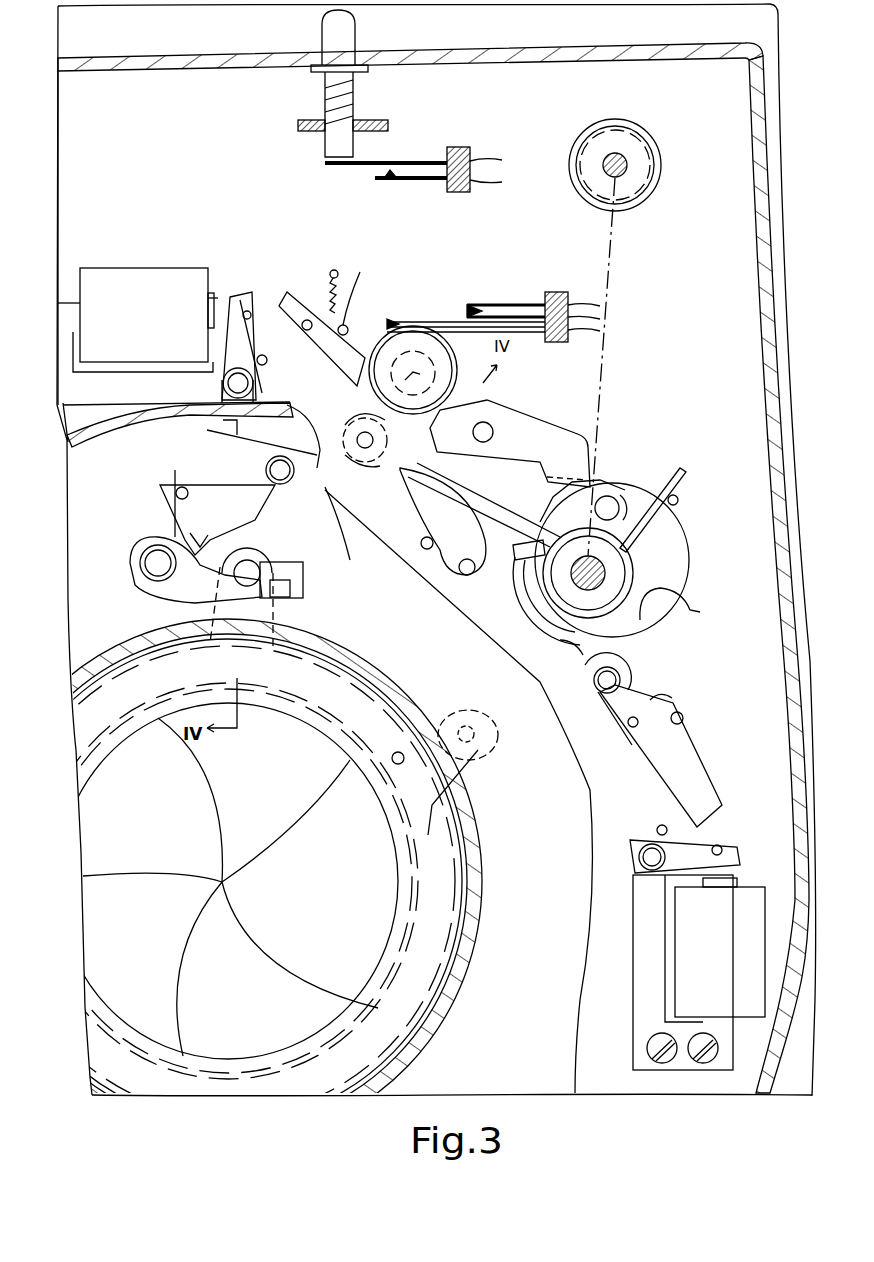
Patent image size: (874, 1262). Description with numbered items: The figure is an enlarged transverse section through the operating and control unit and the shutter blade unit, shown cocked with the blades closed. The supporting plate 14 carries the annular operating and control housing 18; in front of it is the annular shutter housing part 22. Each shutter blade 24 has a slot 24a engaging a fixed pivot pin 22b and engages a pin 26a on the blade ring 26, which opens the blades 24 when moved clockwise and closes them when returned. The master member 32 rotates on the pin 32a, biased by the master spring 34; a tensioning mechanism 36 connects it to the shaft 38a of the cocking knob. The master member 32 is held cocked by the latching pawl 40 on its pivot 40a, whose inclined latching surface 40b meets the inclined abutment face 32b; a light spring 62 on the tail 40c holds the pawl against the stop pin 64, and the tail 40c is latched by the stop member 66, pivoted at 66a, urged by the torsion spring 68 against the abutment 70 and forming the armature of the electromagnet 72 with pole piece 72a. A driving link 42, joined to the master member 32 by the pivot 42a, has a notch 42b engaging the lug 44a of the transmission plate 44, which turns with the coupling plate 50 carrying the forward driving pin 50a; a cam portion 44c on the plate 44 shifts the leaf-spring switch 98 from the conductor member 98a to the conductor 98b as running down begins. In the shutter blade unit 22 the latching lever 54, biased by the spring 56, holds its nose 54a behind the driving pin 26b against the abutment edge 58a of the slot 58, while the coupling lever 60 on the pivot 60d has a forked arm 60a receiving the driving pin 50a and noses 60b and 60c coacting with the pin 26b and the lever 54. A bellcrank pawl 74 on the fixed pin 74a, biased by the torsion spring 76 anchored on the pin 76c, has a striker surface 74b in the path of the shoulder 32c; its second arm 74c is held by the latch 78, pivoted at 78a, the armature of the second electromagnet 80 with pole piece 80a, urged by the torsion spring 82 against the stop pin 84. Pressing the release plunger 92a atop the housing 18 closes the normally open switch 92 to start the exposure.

The supporting plate 14 is at (783, 1090).
The operating and control housing 18 is at (765, 306).
The shutter housing part 22 is at (191, 435).
The fixed pivot pin 22b is at (485, 718).
The shutter blades 24 is at (267, 858).
The slot 24a is at (458, 720).
The shutter blade driving ring 26 is at (350, 656).
The pin 26a is at (392, 766).
The driving pin 26b is at (288, 538).
The master member 32 is at (672, 548).
The pin 32a is at (605, 573).
The inclined abutment face 32b is at (610, 500).
The shoulder 32c is at (572, 652).
The master spring 34 is at (687, 472).
The tensioning mechanism 36 is at (611, 265).
The shaft 38a is at (630, 158).
The latching pawl 40 is at (548, 432).
The pivot 40a is at (490, 425).
The inclined latching surface 40b is at (590, 482).
The tail 40c is at (290, 292).
The driving link 42 is at (494, 496).
The pivot 42a is at (625, 495).
The notch 42b is at (352, 418).
The transmission plate 44 is at (416, 325).
The lug 44a is at (403, 430).
The cam portion 44c is at (385, 318).
The coupling plate 50 is at (408, 475).
The front driving pin 50a is at (424, 538).
The latching lever 54 is at (132, 572).
The nose 54a is at (300, 595).
The spring 56 is at (173, 474).
The slot 58 is at (305, 576).
The abutment edge 58a is at (243, 550).
The coupling lever 60 is at (240, 496).
The first arm 60a is at (363, 477).
The nose 60b is at (280, 558).
The nose 60c is at (197, 540).
The pivot 60d is at (266, 468).
The light spring 62 is at (338, 272).
The stop pin 64 is at (363, 290).
The stop member 66 is at (245, 292).
The pivot 66a is at (230, 385).
The torsion spring 68 is at (240, 342).
The abutment 70 is at (268, 360).
The electromagnet 72 is at (100, 283).
The pole piece 72a is at (218, 298).
The pawl 74 is at (663, 683).
The fixed pin 74a is at (603, 700).
The striker surface 74b is at (700, 612).
The second arm 74c is at (700, 785).
The torsion spring 76 is at (665, 700).
The pin 76c is at (690, 724).
The armature latch 78 is at (722, 838).
The pivot 78a is at (645, 853).
The second electromagnet 80 is at (683, 962).
The pole piece 80a is at (725, 880).
The torsion spring 82 is at (728, 852).
The stop pin 84 is at (662, 825).
The switch 92 is at (413, 157).
The release plunger 92a is at (325, 30).
The two-way switch 98 is at (452, 304).
The conductor member 98a is at (527, 343).
The conductor 98b is at (505, 303).